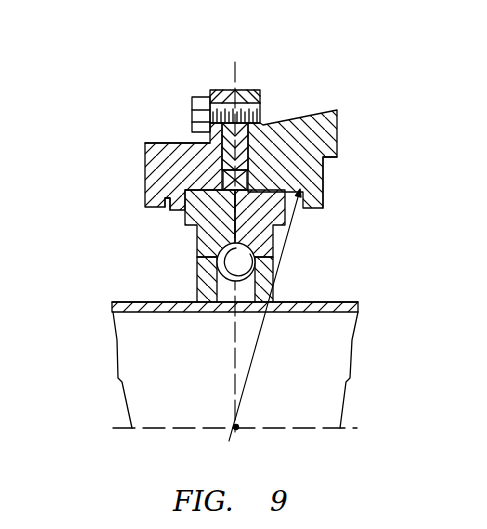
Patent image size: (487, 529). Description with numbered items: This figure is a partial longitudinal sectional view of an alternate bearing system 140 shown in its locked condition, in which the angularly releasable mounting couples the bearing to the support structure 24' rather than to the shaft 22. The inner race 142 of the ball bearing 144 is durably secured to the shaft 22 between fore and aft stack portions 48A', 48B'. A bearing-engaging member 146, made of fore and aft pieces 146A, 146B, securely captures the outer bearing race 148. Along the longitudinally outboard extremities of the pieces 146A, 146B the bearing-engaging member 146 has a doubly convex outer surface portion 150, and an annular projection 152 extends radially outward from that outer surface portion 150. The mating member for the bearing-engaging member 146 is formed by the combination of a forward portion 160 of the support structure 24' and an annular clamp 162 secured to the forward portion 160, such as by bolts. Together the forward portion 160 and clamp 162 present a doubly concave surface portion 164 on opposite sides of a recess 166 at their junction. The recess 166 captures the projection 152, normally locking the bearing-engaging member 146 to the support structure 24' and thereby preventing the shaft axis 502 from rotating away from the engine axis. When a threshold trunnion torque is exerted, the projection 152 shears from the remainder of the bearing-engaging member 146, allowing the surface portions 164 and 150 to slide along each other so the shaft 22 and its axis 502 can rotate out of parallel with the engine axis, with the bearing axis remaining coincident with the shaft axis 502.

The bearing system 140 is at (368, 94).
The forward portion 160 is at (263, 121).
The annular clamp 162 is at (173, 150).
The annular projection 152 is at (151, 154).
The outer surface portion 150 is at (222, 170).
The concave surface portion 164 is at (170, 210).
The recess 166 is at (309, 144).
The support structure 24' is at (346, 182).
The bearing-engaging member 146 is at (219, 226).
The fore piece 146A is at (180, 226).
The aft piece 146B is at (299, 217).
The ball bearing 144 is at (190, 264).
The outer bearing race 148 is at (267, 255).
The inner race 142 is at (222, 299).
The shaft 22 is at (234, 356).
The fore stack portion 48A' is at (127, 295).
The aft stack portion 48B' is at (342, 295).
The shaft axis 502 is at (284, 430).